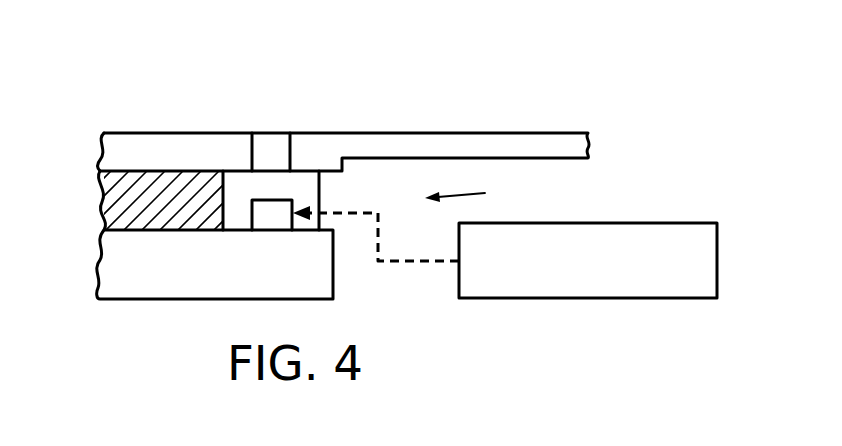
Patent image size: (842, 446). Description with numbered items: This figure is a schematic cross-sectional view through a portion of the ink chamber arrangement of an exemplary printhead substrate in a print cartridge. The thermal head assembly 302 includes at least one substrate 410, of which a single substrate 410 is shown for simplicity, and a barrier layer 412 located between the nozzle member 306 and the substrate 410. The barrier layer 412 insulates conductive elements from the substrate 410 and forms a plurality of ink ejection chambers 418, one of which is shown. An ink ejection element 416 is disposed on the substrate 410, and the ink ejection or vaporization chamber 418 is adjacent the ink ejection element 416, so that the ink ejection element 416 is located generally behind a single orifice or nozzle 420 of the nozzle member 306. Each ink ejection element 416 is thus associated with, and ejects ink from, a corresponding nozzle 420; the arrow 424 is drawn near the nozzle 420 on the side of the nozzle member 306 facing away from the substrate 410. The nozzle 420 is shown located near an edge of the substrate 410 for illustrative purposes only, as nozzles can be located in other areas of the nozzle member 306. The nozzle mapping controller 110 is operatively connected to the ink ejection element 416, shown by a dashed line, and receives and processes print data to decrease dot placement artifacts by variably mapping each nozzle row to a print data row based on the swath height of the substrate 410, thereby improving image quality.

The thermal head assembly 302 is at (546, 105).
The nozzle member 306 is at (399, 143).
The substrate 410 is at (213, 286).
The barrier layer 412 is at (145, 181).
The ink ejection element 416 is at (283, 226).
The ink ejection chamber 418 is at (316, 192).
The nozzle 420 is at (268, 124).
The ink drop trajectory 424 is at (480, 194).
The nozzle mapping controller 110 is at (563, 299).